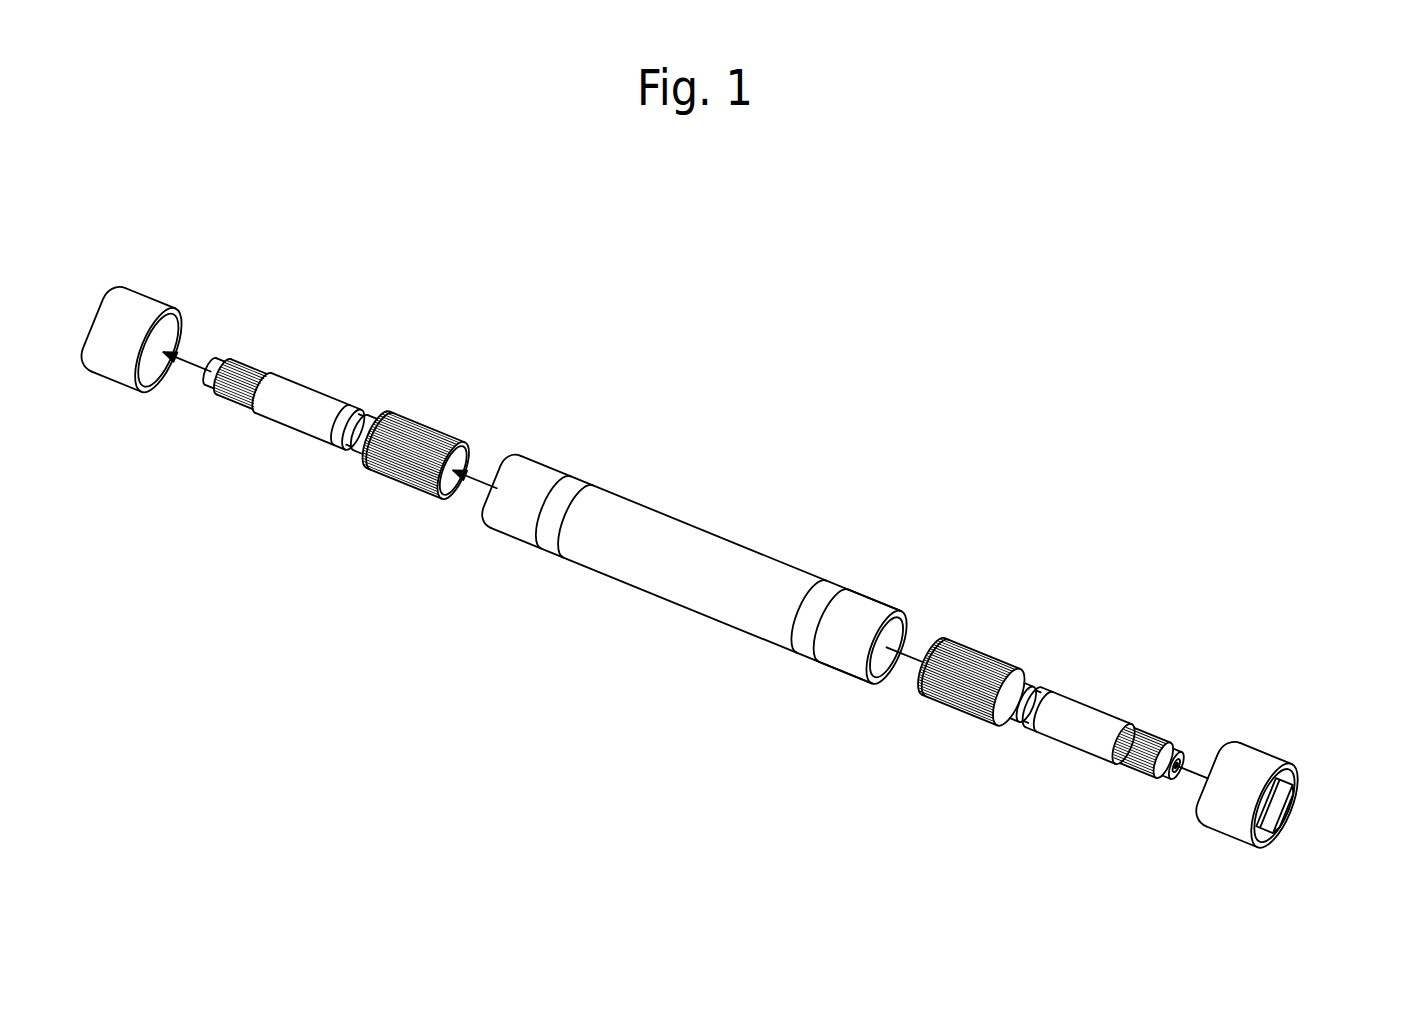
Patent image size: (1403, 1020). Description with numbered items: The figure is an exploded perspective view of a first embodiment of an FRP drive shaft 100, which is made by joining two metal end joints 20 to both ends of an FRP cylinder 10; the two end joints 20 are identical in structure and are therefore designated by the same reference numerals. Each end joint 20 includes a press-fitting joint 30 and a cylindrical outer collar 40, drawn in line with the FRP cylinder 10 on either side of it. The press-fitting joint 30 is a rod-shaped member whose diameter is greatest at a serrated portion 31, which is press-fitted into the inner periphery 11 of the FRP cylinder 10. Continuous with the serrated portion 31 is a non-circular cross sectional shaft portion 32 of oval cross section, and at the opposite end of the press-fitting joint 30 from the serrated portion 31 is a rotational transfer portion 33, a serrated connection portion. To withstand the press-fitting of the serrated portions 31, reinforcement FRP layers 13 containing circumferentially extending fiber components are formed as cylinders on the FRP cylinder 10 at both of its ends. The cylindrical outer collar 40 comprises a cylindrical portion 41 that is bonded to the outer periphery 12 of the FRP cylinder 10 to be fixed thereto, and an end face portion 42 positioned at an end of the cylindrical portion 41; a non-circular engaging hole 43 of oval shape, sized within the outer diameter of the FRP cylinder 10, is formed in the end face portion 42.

The FRP drive shaft 100 is at (1112, 378).
The FRP cylinder 10 is at (752, 522).
The inner periphery 11 is at (895, 632).
The outer periphery 12 is at (866, 605).
The reinforcement FRP layer 13 is at (555, 540).
The end joint 20 is at (333, 203).
The press-fitting joint 30 is at (327, 376).
The serrated portion 31 is at (417, 478).
The non-circular cross sectional shaft portion 32 is at (366, 451).
The rotational transfer portion 33 is at (228, 404).
The cylindrical outer collar 40 is at (166, 280).
The cylindrical portion 41 is at (122, 305).
The end face portion 42 is at (1295, 778).
The non-circular engaging hole 43 is at (1284, 815).